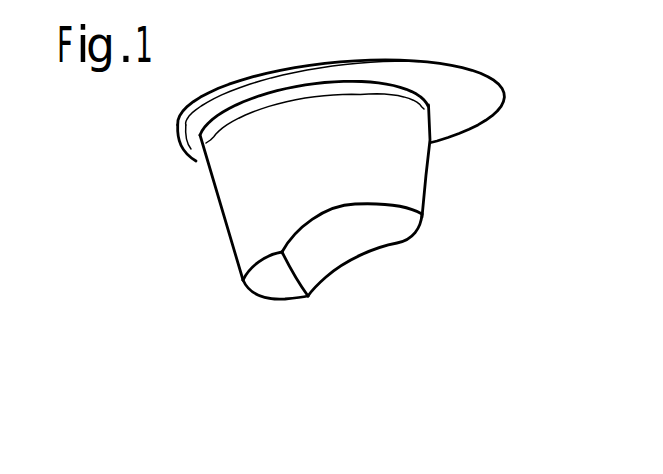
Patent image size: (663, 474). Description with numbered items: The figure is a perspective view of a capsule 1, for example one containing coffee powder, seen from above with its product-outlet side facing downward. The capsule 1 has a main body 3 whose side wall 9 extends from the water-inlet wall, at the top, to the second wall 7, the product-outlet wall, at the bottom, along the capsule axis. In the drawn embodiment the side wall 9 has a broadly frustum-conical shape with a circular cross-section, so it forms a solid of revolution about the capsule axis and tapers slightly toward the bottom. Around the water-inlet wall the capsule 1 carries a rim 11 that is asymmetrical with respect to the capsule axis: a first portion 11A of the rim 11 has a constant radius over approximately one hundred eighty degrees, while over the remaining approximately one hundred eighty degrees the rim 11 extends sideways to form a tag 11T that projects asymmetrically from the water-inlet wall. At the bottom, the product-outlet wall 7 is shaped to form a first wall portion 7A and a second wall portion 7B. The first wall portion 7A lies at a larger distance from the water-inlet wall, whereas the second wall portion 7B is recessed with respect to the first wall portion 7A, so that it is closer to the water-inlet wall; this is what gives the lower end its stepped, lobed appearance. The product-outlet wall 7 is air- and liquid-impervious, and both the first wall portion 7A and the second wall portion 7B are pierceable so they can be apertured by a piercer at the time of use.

The capsule 1 is at (523, 97).
The main body 3 is at (432, 180).
The second wall 7 is at (388, 228).
The first wall portion 7A is at (272, 290).
The second wall portion 7B is at (360, 240).
The side wall 9 is at (226, 232).
The rim 11 is at (334, 58).
The tag 11T is at (453, 78).
The first portion 11A is at (200, 146).